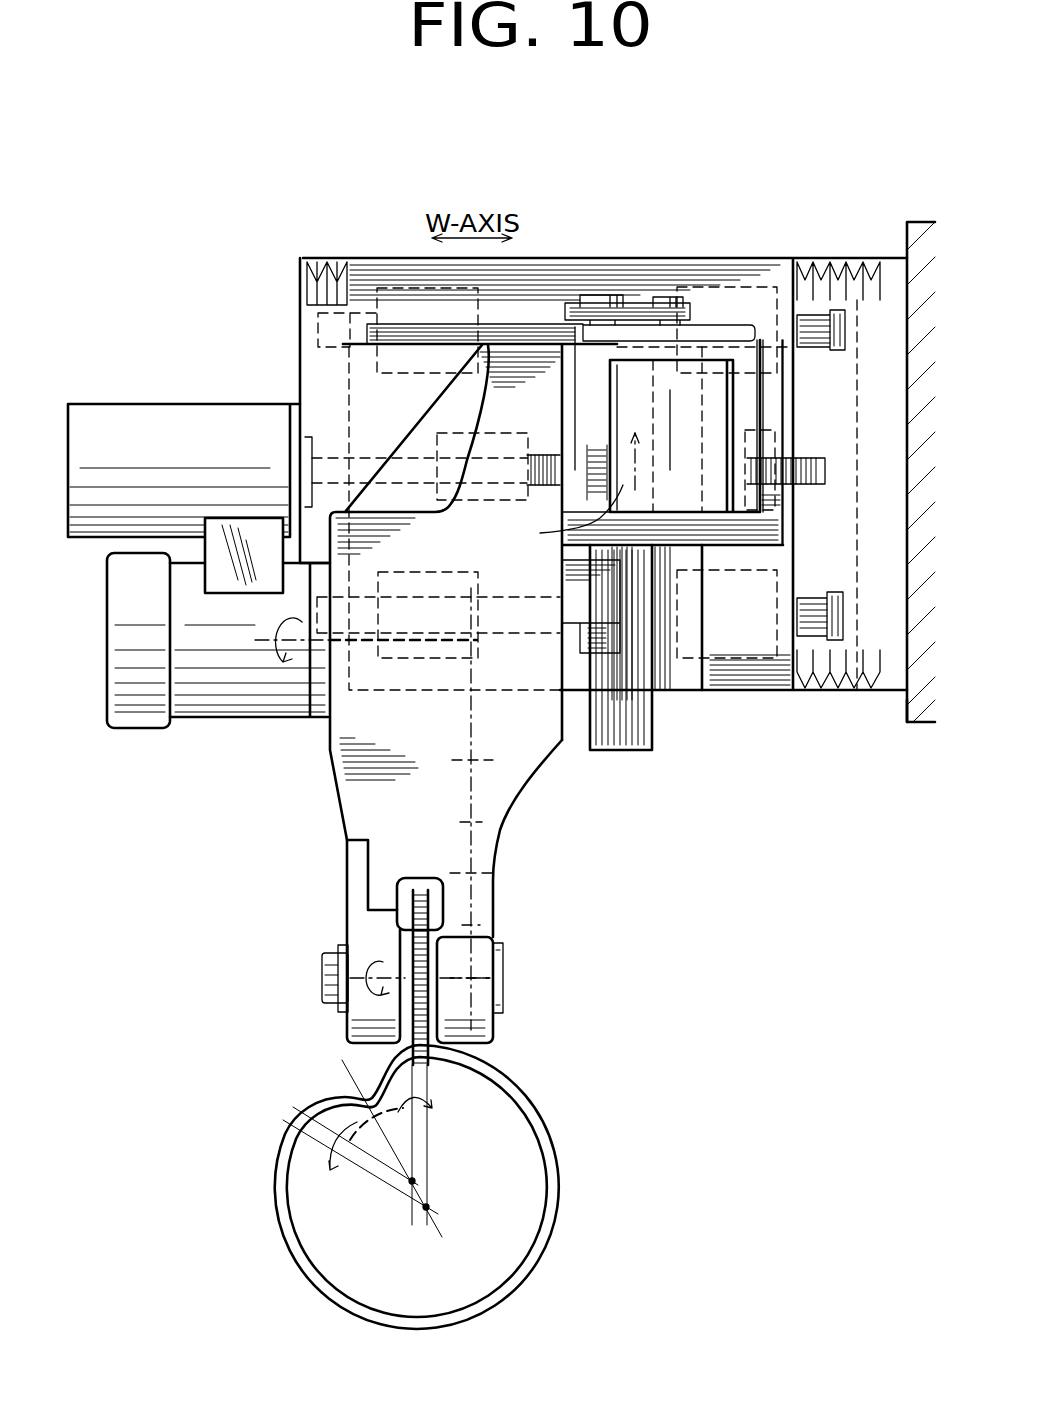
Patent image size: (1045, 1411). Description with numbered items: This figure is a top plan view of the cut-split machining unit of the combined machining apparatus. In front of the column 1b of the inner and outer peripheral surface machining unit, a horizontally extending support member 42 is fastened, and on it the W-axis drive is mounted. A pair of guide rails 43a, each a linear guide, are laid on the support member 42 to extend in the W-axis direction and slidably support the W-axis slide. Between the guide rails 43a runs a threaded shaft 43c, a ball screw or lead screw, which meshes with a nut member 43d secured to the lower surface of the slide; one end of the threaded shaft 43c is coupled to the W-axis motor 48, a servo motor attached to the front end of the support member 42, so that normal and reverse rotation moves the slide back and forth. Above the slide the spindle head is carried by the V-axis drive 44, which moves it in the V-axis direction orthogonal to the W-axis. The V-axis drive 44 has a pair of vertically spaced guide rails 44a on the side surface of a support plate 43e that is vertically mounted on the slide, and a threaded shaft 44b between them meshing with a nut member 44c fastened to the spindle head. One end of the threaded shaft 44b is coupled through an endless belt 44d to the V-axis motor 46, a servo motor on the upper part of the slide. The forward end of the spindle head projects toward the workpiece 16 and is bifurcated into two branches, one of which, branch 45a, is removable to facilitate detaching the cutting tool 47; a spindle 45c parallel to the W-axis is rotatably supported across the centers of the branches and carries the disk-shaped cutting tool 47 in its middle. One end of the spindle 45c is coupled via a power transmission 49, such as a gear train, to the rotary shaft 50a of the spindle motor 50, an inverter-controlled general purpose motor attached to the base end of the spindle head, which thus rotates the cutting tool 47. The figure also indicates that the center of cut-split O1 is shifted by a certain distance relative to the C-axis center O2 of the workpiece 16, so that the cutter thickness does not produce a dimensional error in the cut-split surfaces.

The column 1b is at (907, 712).
The workpiece 16 is at (441, 1187).
The support member 42 is at (888, 275).
The guide rails 43a is at (813, 318).
The threaded shaft 43c is at (822, 472).
The nut member 43d is at (745, 430).
The support plate 43e is at (693, 640).
The V-axis drive 44 is at (817, 387).
The guide rails 44a is at (652, 712).
The threaded shaft 44b is at (575, 640).
The nut member 44c is at (657, 560).
The endless belt 44d is at (643, 300).
The V-axis motor 46 is at (727, 495).
The cutting tool 47 is at (418, 890).
The W-axis motor 48 is at (210, 418).
The power transmission 49 is at (482, 803).
The spindle motor 50 is at (253, 705).
The rotary shaft 50a is at (412, 638).
The branch 45a is at (360, 1020).
The spindle 45c is at (443, 945).
The center of cut-split O1 is at (432, 1208).
The C-axis center O2 is at (425, 1181).